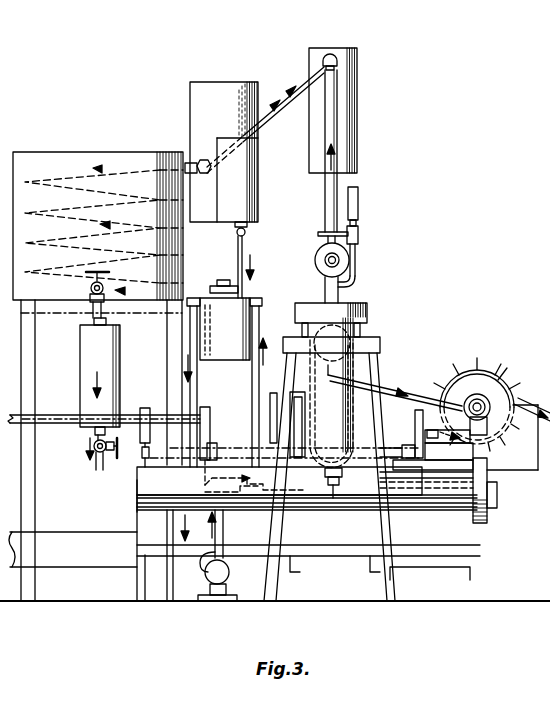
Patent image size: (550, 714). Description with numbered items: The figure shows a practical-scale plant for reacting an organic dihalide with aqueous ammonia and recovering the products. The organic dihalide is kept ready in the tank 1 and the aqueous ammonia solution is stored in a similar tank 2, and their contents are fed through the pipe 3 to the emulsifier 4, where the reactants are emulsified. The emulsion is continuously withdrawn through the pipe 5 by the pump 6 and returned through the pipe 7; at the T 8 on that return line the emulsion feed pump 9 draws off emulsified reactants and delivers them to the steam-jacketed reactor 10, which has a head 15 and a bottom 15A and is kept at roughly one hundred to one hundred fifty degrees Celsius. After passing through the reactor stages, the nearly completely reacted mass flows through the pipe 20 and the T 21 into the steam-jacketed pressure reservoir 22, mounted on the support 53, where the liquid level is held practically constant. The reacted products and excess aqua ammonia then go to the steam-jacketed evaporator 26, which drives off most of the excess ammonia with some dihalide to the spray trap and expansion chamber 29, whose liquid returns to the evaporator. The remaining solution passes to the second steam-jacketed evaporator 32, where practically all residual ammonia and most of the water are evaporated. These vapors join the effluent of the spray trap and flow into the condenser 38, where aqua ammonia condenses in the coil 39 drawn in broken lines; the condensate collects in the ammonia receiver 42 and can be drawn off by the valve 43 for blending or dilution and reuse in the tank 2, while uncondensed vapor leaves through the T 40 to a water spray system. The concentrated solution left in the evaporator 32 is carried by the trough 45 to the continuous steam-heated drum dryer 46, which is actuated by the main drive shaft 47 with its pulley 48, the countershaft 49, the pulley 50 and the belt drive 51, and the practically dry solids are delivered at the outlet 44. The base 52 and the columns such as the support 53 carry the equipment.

The tank 1 is at (250, 180).
The tank 2 is at (224, 149).
The pipe 3 is at (238, 249).
The emulsifier 4 is at (248, 308).
The pipe 5 is at (200, 393).
The pump 6 is at (229, 572).
The pipe 7 is at (247, 395).
The T 8 is at (278, 488).
The emulsion feed pump 9 is at (296, 424).
The steam-jacketed reactor 10 is at (244, 524).
The head 15 is at (487, 507).
The bottom 15A is at (137, 492).
The pipe 20 is at (538, 525).
The T 21 is at (544, 472).
The steam-jacketed pressure reservoir 22 is at (331, 408).
The steam-jacketed evaporator 26 is at (315, 260).
The spray trap and expansion chamber 29 is at (333, 131).
The steam-jacketed evaporator 32 is at (366, 310).
The condenser 38 is at (112, 367).
The coil 39 is at (48, 182).
The T 40 is at (90, 288).
The ammonia receiver 42 is at (90, 380).
The valve 43 is at (116, 458).
The outlet 44 is at (532, 401).
The trough 45 is at (395, 378).
The drum dryer 46 is at (492, 367).
The main drive shaft 47 is at (55, 414).
The pulley 48 is at (188, 434).
The countershaft 49 is at (222, 452).
The pulley 50 is at (415, 436).
The belt drive 51 is at (449, 448).
The base 52 is at (292, 588).
The support 53 is at (545, 583).